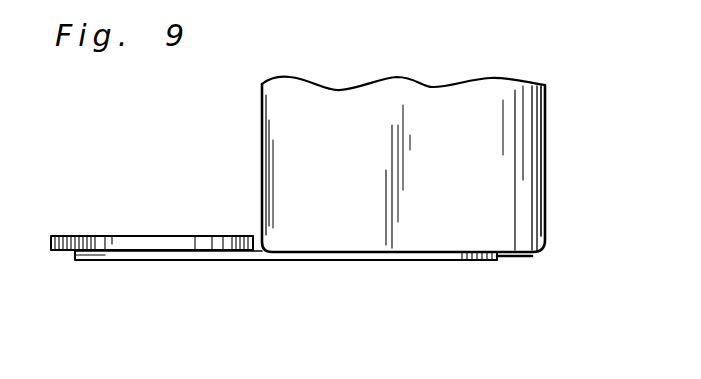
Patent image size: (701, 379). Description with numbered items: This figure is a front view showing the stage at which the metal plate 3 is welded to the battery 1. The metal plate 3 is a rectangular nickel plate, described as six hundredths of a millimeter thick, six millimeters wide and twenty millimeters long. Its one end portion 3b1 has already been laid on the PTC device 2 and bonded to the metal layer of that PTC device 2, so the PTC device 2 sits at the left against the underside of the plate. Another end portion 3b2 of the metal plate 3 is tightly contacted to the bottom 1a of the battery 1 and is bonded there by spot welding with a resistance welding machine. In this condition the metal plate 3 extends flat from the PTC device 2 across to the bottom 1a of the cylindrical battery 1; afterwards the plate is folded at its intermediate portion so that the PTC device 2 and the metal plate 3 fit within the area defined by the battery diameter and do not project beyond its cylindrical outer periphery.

The battery 1 is at (502, 152).
The bottom of the battery 1a is at (516, 259).
The PTC device 2 is at (98, 242).
The metal plate 3 is at (265, 257).
The one end portion of the metal plate 3b1 is at (140, 253).
The another end portion of the metal plate 3b2 is at (417, 256).